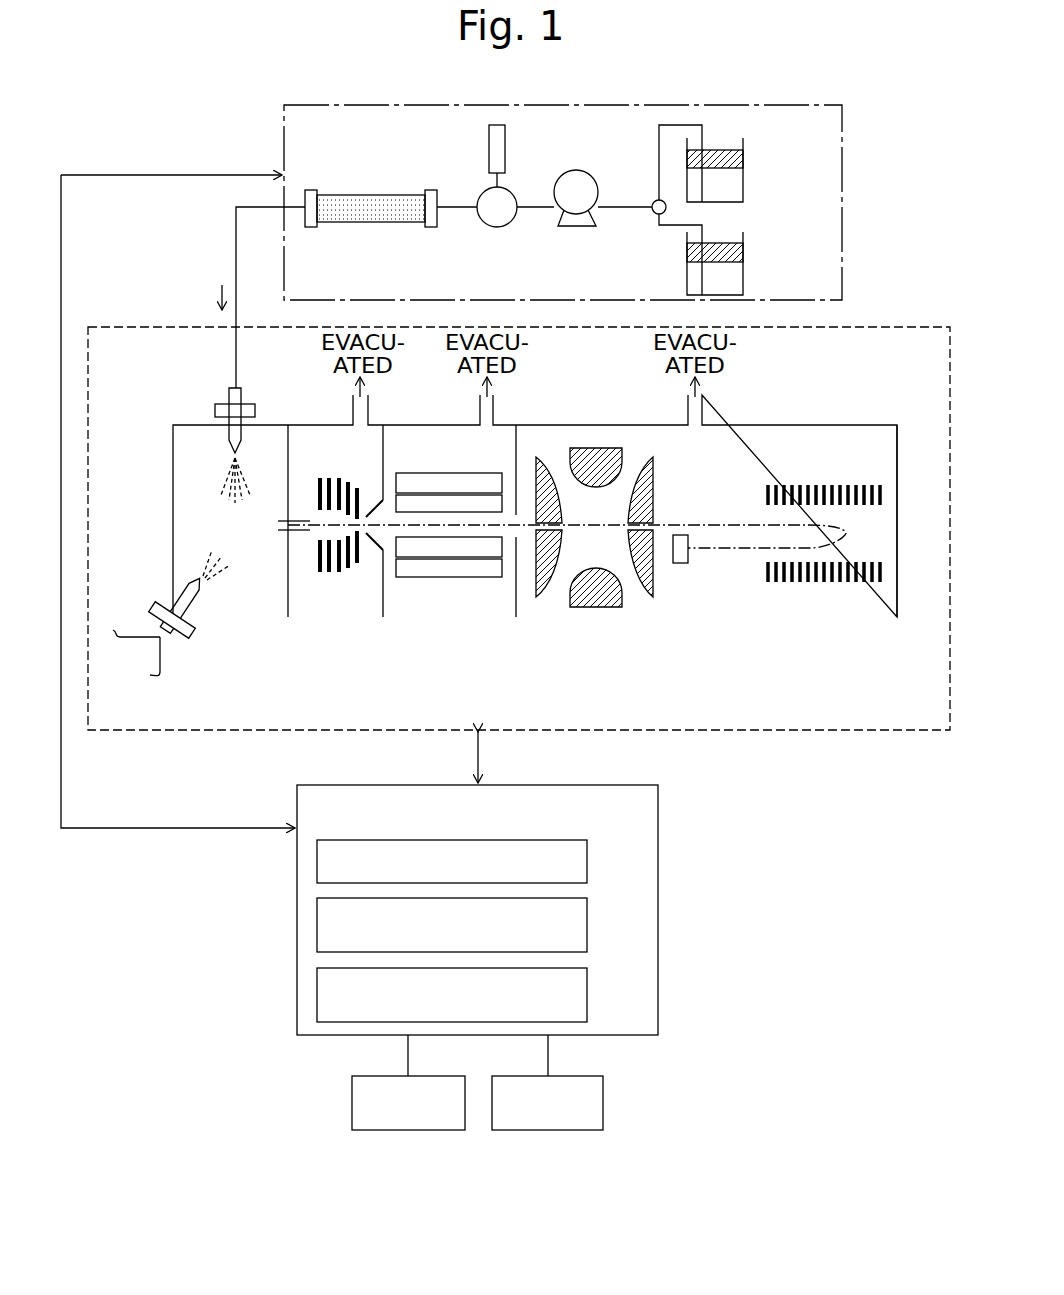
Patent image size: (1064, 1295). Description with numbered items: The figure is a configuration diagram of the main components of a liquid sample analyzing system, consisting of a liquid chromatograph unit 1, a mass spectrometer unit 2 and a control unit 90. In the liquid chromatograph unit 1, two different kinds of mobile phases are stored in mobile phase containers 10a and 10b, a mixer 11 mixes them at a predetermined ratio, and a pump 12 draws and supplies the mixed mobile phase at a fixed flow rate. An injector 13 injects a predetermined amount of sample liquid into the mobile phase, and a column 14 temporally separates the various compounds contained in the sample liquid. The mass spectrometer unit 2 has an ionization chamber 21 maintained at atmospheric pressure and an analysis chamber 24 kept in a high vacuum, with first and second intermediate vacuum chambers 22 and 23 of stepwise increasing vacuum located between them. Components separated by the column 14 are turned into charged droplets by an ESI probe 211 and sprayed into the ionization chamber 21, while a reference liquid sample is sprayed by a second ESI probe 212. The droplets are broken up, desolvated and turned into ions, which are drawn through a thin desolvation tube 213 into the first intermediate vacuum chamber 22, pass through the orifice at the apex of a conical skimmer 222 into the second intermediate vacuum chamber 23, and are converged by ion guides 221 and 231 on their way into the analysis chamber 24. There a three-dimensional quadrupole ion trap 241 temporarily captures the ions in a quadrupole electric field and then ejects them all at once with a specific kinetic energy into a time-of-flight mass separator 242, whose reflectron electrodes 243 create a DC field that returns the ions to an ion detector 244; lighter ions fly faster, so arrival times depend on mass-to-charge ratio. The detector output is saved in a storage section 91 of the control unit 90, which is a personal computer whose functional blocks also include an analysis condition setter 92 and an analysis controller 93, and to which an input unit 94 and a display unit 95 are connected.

The liquid chromatograph unit 1 is at (842, 141).
The mobile phase container 10a is at (743, 181).
The mobile phase container 10b is at (743, 266).
The mixer 11 is at (652, 215).
The pump 12 is at (580, 227).
The injector 13 is at (503, 228).
The column 14 is at (388, 226).
The mass spectrometer unit 2 is at (858, 326).
The ionization chamber 21 is at (190, 525).
The ESI probe 211 is at (216, 406).
The ESI probe 212 is at (183, 633).
The desolvation tube 213 is at (283, 516).
The first intermediate vacuum chamber 22 is at (319, 612).
The ion guide 221 is at (327, 482).
The skimmer 222 is at (370, 540).
The second intermediate vacuum chamber 23 is at (429, 612).
The ion guide 231 is at (433, 473).
The analysis chamber 24 is at (554, 612).
The three-dimensional quadrupole ion trap 241 is at (619, 448).
The time-of-flight mass separator 242 is at (753, 490).
The reflectron electrodes 243 is at (873, 597).
The ion detector 244 is at (681, 563).
The control unit 90 is at (658, 826).
The storage section 91 is at (588, 862).
The analysis condition setter 92 is at (588, 920).
The analysis controller 93 is at (587, 988).
The input unit 94 is at (427, 1130).
The display unit 95 is at (563, 1130).